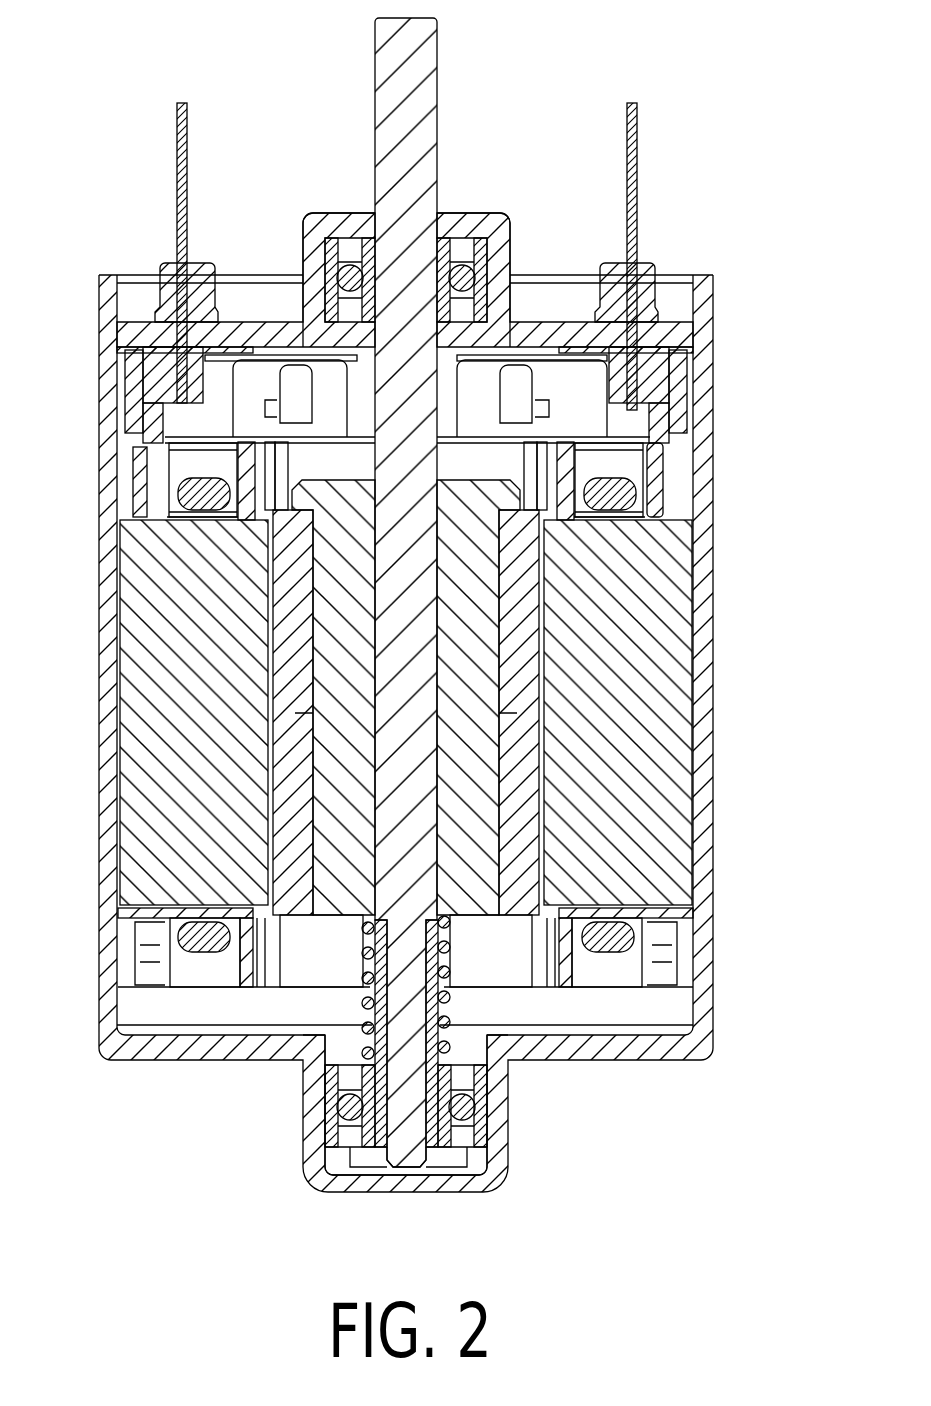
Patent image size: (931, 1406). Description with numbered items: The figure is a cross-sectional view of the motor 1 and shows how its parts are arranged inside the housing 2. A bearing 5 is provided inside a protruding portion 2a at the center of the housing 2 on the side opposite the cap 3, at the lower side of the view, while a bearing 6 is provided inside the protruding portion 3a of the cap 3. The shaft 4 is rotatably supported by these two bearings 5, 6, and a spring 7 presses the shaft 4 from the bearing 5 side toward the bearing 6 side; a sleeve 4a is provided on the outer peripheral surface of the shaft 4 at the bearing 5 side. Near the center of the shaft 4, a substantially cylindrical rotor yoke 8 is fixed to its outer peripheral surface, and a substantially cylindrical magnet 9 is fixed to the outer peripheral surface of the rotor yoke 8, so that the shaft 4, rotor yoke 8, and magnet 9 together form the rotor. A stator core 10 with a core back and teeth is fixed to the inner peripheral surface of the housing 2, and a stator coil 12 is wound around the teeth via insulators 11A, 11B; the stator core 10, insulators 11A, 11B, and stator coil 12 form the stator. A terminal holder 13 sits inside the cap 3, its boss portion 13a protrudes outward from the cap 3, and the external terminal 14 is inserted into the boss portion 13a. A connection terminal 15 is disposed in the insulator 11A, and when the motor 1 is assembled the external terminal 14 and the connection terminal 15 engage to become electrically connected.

The motor 1 is at (687, 80).
The housing 2 is at (702, 708).
The protruding portion 2a is at (318, 1117).
The cap 3 is at (675, 331).
The protruding portion 3a is at (322, 232).
The shaft 4 is at (417, 88).
The sleeve 4a is at (433, 1132).
The bearing 5 is at (473, 1118).
The bearing 6 is at (481, 257).
The spring 7 is at (452, 1003).
The rotor yoke 8 is at (465, 633).
The magnet 9 is at (522, 668).
The stator core 10 is at (653, 763).
The insulator 11A is at (648, 447).
The insulator 11B is at (650, 925).
The stator coil 12 is at (619, 491).
The terminal holder 13 is at (150, 397).
The boss portion 13a is at (164, 293).
The external terminal 14 is at (180, 130).
The connection terminal 15 is at (150, 465).